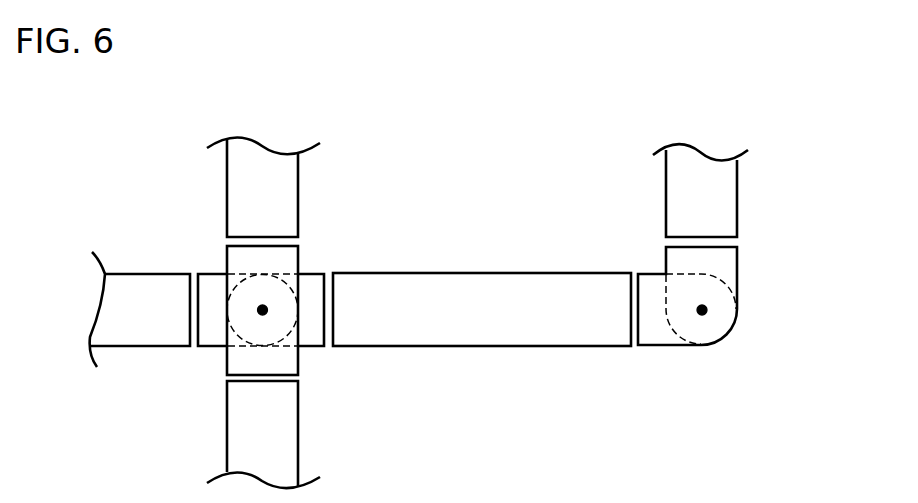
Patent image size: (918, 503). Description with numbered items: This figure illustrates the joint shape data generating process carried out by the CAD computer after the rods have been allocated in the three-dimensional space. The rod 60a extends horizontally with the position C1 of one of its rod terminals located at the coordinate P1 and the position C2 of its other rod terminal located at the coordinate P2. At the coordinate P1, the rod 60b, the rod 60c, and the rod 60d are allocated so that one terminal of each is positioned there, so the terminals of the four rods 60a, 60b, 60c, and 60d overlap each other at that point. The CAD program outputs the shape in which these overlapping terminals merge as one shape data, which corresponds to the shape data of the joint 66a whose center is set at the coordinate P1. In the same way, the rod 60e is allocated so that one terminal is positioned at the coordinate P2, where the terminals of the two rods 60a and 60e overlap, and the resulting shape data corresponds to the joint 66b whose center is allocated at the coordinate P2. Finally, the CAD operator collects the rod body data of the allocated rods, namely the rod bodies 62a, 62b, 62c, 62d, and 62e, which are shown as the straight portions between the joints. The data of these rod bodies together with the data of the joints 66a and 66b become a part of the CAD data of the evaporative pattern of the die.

The rod body 62a is at (482, 350).
The rod 60a is at (526, 325).
The rod body 62b is at (140, 334).
The rod 60b is at (132, 327).
The rod body 62c is at (226, 187).
The rod 60c is at (242, 190).
The rod body 62d is at (227, 434).
The rod 60d is at (243, 430).
The rod body 62e is at (747, 190).
The rod 60e is at (724, 197).
The joint 66a is at (285, 258).
The joint 66b is at (724, 263).
The coordinate P1 is at (320, 366).
The position of rod terminal C1 is at (268, 310).
The coordinate P2 is at (698, 358).
The position of rod terminal C2 is at (702, 316).